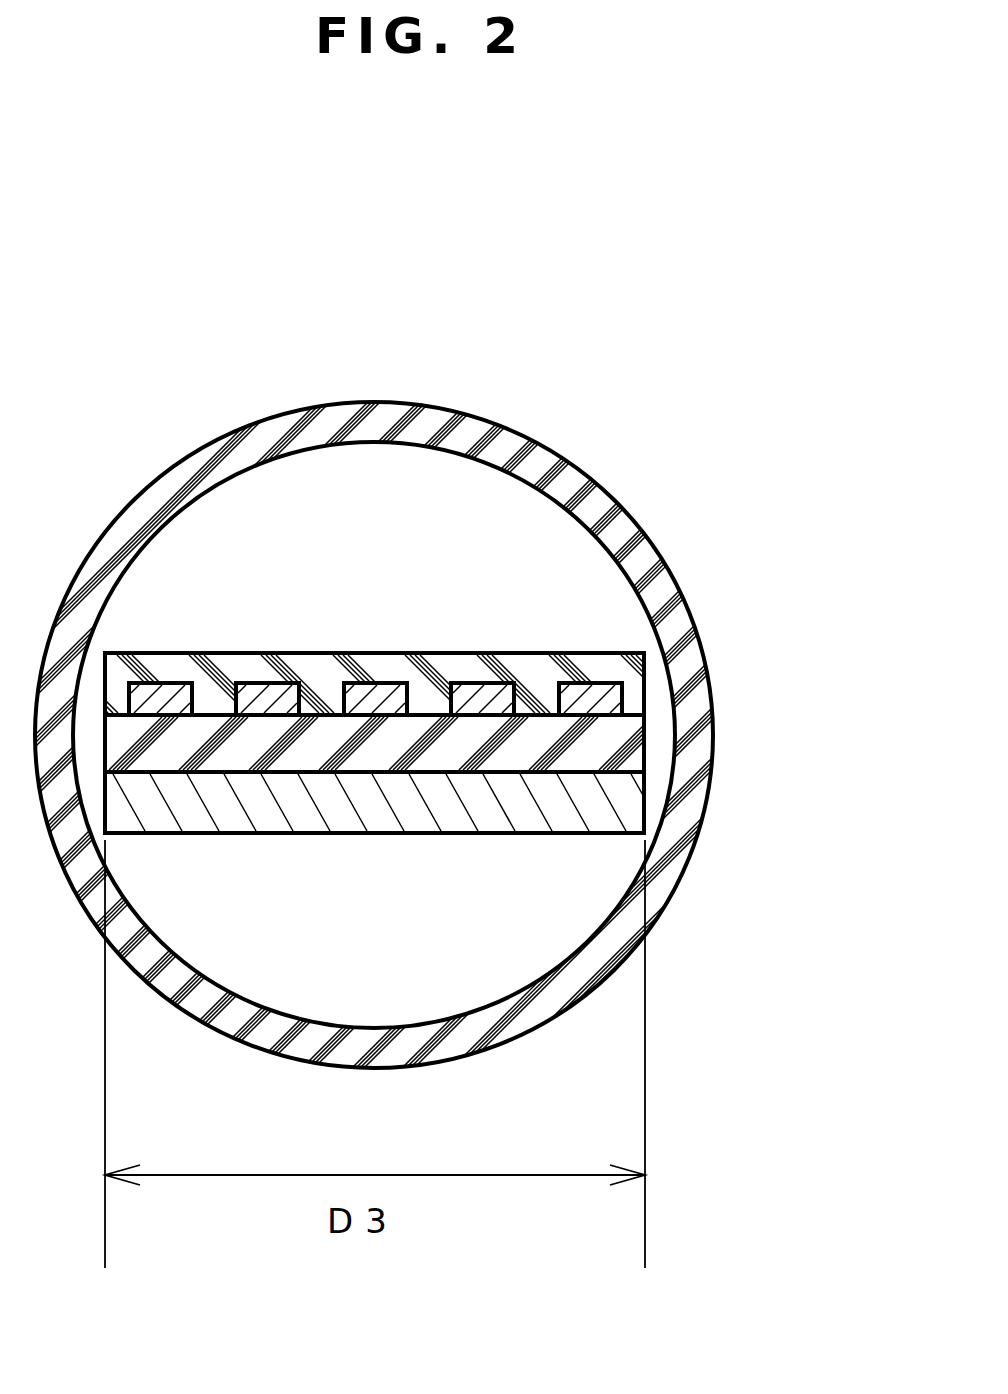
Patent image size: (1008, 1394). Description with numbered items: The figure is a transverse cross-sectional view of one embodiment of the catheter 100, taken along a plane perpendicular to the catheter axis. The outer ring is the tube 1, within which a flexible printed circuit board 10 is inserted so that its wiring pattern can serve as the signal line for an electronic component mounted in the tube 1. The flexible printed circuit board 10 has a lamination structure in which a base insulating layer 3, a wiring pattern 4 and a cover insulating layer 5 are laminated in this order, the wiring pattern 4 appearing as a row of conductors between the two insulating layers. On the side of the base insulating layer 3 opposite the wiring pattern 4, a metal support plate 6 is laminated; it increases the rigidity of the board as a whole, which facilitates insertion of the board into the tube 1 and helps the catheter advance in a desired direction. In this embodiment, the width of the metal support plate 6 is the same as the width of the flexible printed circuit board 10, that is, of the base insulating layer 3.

The catheter 100 is at (517, 390).
The tube 1 is at (386, 410).
The flexible printed circuit board 10 is at (448, 623).
The base insulating layer 3 is at (647, 743).
The wiring pattern 4 is at (590, 687).
The cover insulating layer 5 is at (544, 657).
The metal support plate 6 is at (603, 807).